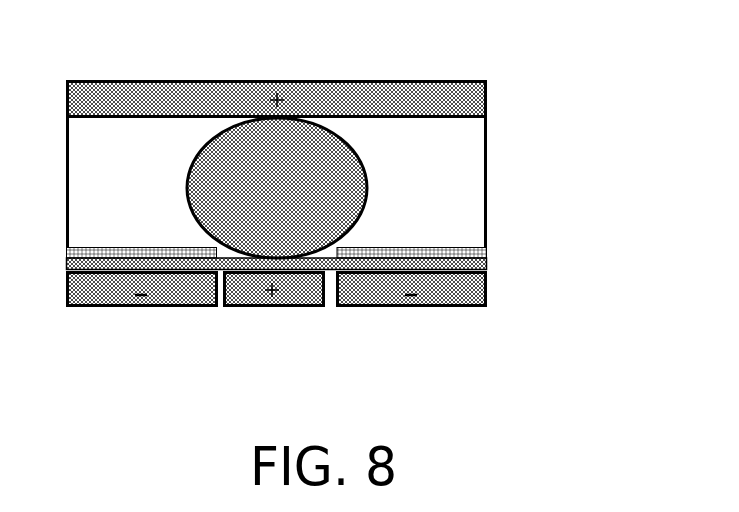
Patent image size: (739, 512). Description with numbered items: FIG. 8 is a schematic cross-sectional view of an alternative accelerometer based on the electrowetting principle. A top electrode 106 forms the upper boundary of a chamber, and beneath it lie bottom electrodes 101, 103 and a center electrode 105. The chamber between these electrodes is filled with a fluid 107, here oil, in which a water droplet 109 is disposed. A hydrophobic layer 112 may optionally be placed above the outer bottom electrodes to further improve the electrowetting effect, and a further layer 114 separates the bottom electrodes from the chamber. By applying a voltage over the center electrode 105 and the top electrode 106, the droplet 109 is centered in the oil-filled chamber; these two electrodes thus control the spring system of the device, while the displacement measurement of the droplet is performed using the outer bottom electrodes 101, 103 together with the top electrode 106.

The bottom electrode 101 is at (97, 308).
The bottom electrode 103 is at (373, 308).
The center electrode 105 is at (271, 308).
The top electrode 106 is at (254, 80).
The fluid 107 is at (159, 140).
The droplet 109 is at (312, 137).
The hydrophobic layer 112 is at (487, 252).
The dielectric layer 114 is at (487, 264).